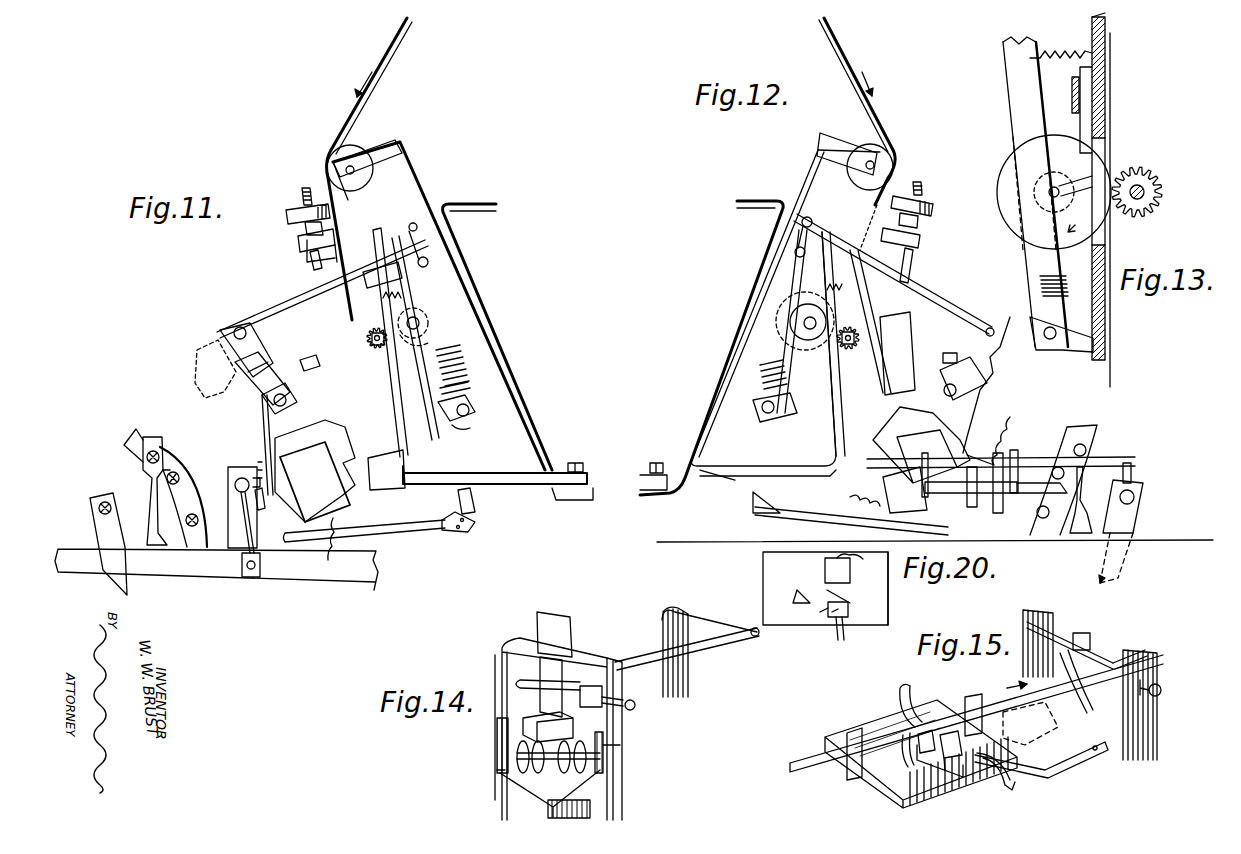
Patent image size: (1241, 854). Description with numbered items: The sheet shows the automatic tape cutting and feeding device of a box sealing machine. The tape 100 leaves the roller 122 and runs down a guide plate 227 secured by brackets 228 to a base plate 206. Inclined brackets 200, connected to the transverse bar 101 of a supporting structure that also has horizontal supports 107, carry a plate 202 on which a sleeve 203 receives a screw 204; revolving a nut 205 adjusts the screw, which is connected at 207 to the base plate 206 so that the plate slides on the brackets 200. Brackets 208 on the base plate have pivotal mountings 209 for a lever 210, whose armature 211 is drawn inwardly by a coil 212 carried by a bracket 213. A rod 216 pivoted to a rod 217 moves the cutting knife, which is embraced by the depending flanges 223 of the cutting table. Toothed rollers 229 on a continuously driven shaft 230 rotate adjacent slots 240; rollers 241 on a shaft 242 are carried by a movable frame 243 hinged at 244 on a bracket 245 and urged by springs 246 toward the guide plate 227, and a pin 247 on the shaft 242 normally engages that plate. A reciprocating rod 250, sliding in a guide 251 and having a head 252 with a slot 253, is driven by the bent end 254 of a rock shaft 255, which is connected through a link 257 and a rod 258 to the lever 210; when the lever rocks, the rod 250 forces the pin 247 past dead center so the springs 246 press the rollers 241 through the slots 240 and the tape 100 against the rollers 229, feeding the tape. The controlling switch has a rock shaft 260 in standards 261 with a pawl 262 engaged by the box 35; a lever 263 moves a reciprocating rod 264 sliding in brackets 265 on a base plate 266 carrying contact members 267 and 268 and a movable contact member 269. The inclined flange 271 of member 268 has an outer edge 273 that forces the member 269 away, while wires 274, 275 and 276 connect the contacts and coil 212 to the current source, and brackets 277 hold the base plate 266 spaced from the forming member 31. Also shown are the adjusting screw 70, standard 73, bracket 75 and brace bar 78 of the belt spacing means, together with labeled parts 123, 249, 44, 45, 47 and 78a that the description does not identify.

In FIG. 11, the tape 100 is at (398, 51).
In FIG. 12, the tape 100 is at (848, 52).
In FIG. 13, the tape 100 is at (1115, 373).
In FIG. 11, the transverse bar 101 is at (589, 488).
In FIG. 12, the transverse bar 101 is at (653, 476).
In FIG. 11, the horizontal supports 107 is at (472, 207).
In FIG. 12, the horizontal supports 107 is at (765, 200).
In FIG. 11, the roller 122 is at (352, 151).
In FIG. 12, the roller 122 is at (892, 162).
In FIG. 11, the roller plate 123 is at (398, 151).
In FIG. 11, the brackets 200 is at (376, 386).
In FIG. 11, the plate 202 is at (405, 233).
In FIG. 11, the sleeve 203 is at (308, 243).
In FIG. 12, the sleeve 203 is at (921, 228).
In FIG. 11, the screw 204 is at (303, 192).
In FIG. 12, the screw 204 is at (918, 182).
In FIG. 11, the nut 205 is at (290, 216).
In FIG. 12, the nut 205 is at (935, 204).
In FIG. 11, the base plate 206 is at (330, 342).
In FIG. 11, the connection 207 is at (360, 305).
In FIG. 11, the brackets 208 is at (318, 380).
In FIG. 11, the pivotal mountings 209 is at (286, 397).
In FIG. 11, the lever 210 is at (232, 346).
In FIG. 14, the lever 210 is at (665, 618).
In FIG. 12, the armature 211 is at (972, 432).
In FIG. 12, the coil 212 is at (862, 508).
In FIG. 11, the bracket 213 is at (352, 493).
In FIG. 11, the rod 216 is at (250, 527).
In FIG. 11, the rod 217 is at (396, 543).
In FIG. 11, the depending flanges 223 is at (384, 349).
In FIG. 11, the guide plate 227 is at (450, 465).
In FIG. 12, the guide plate 227 is at (780, 452).
In FIG. 14, the guide plate 227 is at (516, 645).
In FIG. 11, the brackets 228 is at (402, 438).
In FIG. 12, the brackets 228 is at (813, 423).
In FIG. 12, the toothed rollers 229 is at (857, 342).
In FIG. 11, the shaft 230 is at (450, 362).
In FIG. 12, the shaft 230 is at (816, 331).
In FIG. 14, the slots 240 is at (606, 737).
In FIG. 11, the rollers 241 is at (432, 340).
In FIG. 14, the rollers 241 is at (540, 765).
In FIG. 11, the shaft 242 is at (420, 325).
In FIG. 14, the shaft 242 is at (605, 782).
In FIG. 11, the movable frame 243 is at (455, 380).
In FIG. 14, the movable frame 243 is at (592, 790).
In FIG. 11, the hinge mounting 244 is at (470, 410).
In FIG. 11, the bracket 245 is at (479, 434).
In FIG. 14, the springs 246 is at (631, 748).
In FIG. 14, the pin 247 is at (572, 745).
In FIG. 14, the pin 249 is at (500, 775).
In FIG. 14, the reciprocating rod 250 is at (542, 712).
In FIG. 14, the guide 251 is at (563, 676).
In FIG. 14, the head 252 is at (505, 653).
In FIG. 14, the slot 253 is at (565, 665).
In FIG. 14, the bent end 254 is at (515, 684).
In FIG. 14, the rock shaft 255 is at (618, 695).
In FIG. 11, the link 257 is at (288, 301).
In FIG. 12, the link 257 is at (950, 312).
In FIG. 14, the link 257 is at (704, 648).
In FIG. 14, the rod 258 is at (710, 617).
In FIG. 15, the rock shaft 260 is at (1050, 633).
In FIG. 15, the standards 261 is at (1025, 661).
In FIG. 15, the pawl 262 is at (1083, 688).
In FIG. 15, the lever 263 is at (1158, 684).
In FIG. 15, the reciprocating rod 264 is at (1123, 658).
In FIG. 15, the brackets 265 is at (845, 733).
In FIG. 20, the base plate 266 is at (889, 594).
In FIG. 20, the contact member 267 is at (825, 573).
In FIG. 15, the contact member 267 is at (966, 744).
In FIG. 20, the contact member 268 is at (848, 610).
In FIG. 15, the contact member 268 is at (945, 768).
In FIG. 20, the movable contact member 269 is at (788, 595).
In FIG. 15, the movable contact member 269 is at (918, 750).
In FIG. 20, the flange 271 is at (845, 598).
In FIG. 20, the outer edge 273 is at (826, 609).
In FIG. 15, the wire 274 is at (1013, 775).
In FIG. 12, the wire 275 is at (841, 500).
In FIG. 15, the wire 275 is at (900, 705).
In FIG. 11, the wire 276 is at (327, 558).
In FIG. 12, the wire 276 is at (1012, 420).
In FIG. 15, the brackets 277 is at (1060, 768).
In FIG. 11, the forming member 31 is at (305, 575).
In FIG. 15, the box 35 is at (1035, 732).
In FIG. 11, the bracket 44 is at (247, 533).
In FIG. 11, the rod 45 is at (240, 477).
In FIG. 11, the plate 47 is at (232, 505).
In FIG. 11, the screw 70 is at (164, 447).
In FIG. 12, the screw 70 is at (1105, 455).
In FIG. 11, the standard 73 is at (115, 502).
In FIG. 12, the standard 73 is at (1079, 467).
In FIG. 11, the bracket 75 is at (185, 481).
In FIG. 12, the bracket 75 is at (1100, 432).
In FIG. 11, the brace bar 78 is at (178, 471).
In FIG. 12, the brace bar 78 is at (1052, 468).
In FIG. 11, the pin 78a is at (199, 520).
In FIG. 12, the pin 78a is at (1045, 518).